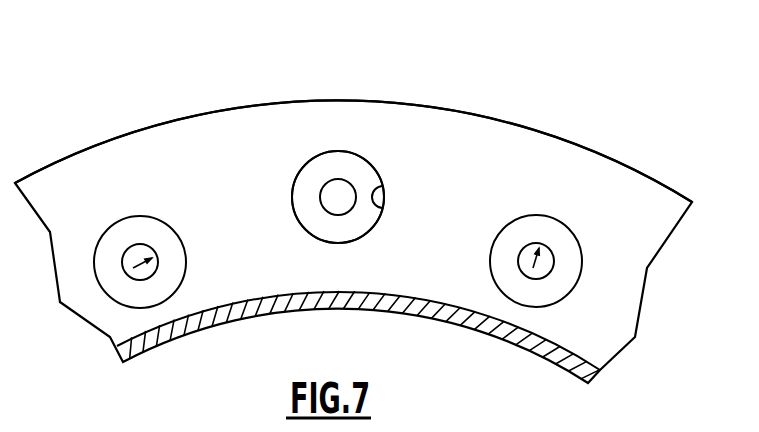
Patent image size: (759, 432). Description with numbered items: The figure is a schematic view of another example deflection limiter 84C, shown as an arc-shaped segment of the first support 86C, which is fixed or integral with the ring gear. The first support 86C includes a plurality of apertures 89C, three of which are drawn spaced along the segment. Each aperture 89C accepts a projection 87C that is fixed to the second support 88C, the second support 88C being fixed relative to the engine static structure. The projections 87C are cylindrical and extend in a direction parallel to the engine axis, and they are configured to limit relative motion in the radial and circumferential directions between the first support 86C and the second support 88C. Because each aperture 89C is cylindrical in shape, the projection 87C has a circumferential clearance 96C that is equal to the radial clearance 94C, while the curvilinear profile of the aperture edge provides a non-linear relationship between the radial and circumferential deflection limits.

The deflection limiter 84C is at (637, 80).
The first support 86C is at (523, 150).
The projection 87C is at (337, 188).
The second support 88C is at (347, 167).
The aperture 89C is at (383, 207).
The radial clearance 94C is at (553, 217).
The circumferential clearance 96C is at (183, 242).